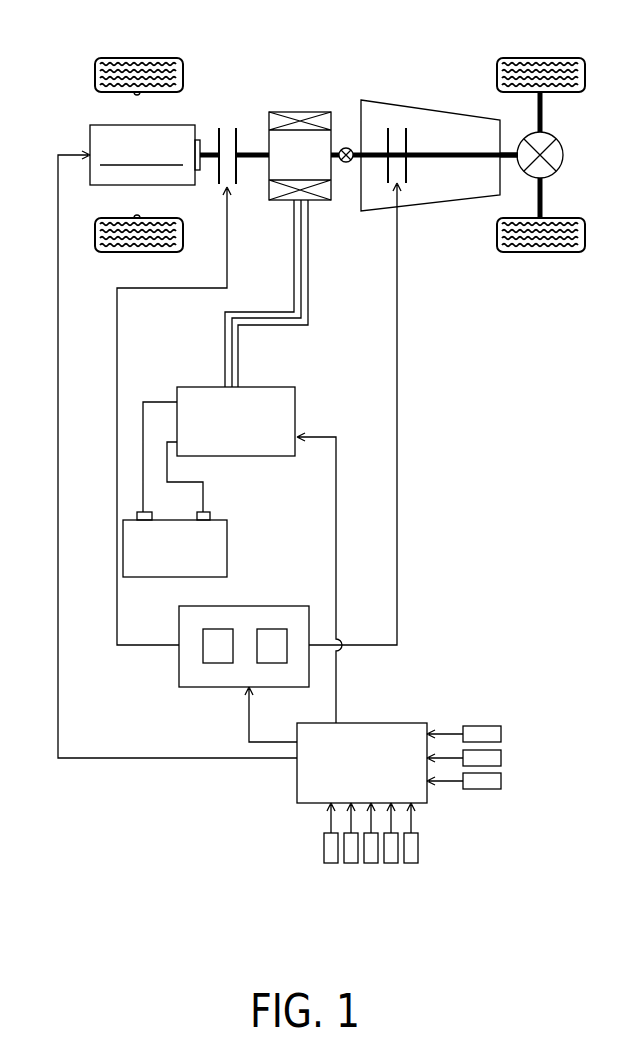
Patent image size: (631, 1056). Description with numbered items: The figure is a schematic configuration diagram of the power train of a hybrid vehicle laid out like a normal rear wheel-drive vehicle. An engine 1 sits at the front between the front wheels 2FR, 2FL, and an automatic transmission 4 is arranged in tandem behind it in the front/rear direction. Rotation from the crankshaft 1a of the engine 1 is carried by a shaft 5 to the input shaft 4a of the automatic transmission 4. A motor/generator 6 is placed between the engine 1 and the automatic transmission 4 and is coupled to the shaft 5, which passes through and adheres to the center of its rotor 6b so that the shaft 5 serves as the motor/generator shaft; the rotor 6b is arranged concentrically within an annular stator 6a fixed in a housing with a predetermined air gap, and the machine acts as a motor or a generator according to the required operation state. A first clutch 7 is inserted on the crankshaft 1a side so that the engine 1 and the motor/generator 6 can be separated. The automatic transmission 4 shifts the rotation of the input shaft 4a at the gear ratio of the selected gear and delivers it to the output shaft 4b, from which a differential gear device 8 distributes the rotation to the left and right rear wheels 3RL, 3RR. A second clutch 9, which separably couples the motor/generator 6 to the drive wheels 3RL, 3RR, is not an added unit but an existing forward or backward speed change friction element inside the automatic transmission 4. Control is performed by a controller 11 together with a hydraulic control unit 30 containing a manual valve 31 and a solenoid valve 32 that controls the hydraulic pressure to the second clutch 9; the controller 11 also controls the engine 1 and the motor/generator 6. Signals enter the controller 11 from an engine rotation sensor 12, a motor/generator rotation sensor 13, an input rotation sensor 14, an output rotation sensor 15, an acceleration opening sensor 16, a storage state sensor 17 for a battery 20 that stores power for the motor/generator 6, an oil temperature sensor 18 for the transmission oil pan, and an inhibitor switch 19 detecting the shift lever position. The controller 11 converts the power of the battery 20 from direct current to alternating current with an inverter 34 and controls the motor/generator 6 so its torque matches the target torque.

The engine 1 is at (113, 125).
The crankshaft 1a is at (208, 150).
The front right wheel 2FR is at (95, 78).
The front left wheel 2FL is at (95, 243).
The right rear wheel 3RR is at (498, 70).
The left rear wheel 3RL is at (498, 243).
The automatic transmission 4 is at (434, 101).
The input shaft 4a is at (356, 148).
The output shaft 4b is at (510, 162).
The shaft 5 is at (257, 150).
The motor/generator 6 is at (294, 109).
The stator 6a is at (278, 120).
The rotor 6b is at (323, 140).
The first clutch 7 is at (228, 130).
The differential gear device 8 is at (566, 150).
The second clutch 9 is at (395, 127).
The controller 11 is at (297, 778).
The engine rotation sensor 12 is at (503, 734).
The motor/generator rotation sensor 13 is at (503, 758).
The input rotation sensor 14 is at (503, 781).
The output rotation sensor 15 is at (411, 863).
The acceleration opening sensor 16 is at (391, 863).
The storage state sensor 17 is at (371, 863).
The oil temperature sensor 18 is at (351, 863).
The inhibitor switch 19 is at (331, 863).
The battery 20 is at (177, 518).
The hydraulic control unit 30 is at (240, 650).
The manual valve 31 is at (220, 628).
The solenoid valve 32 is at (270, 628).
The inverter 34 is at (262, 385).